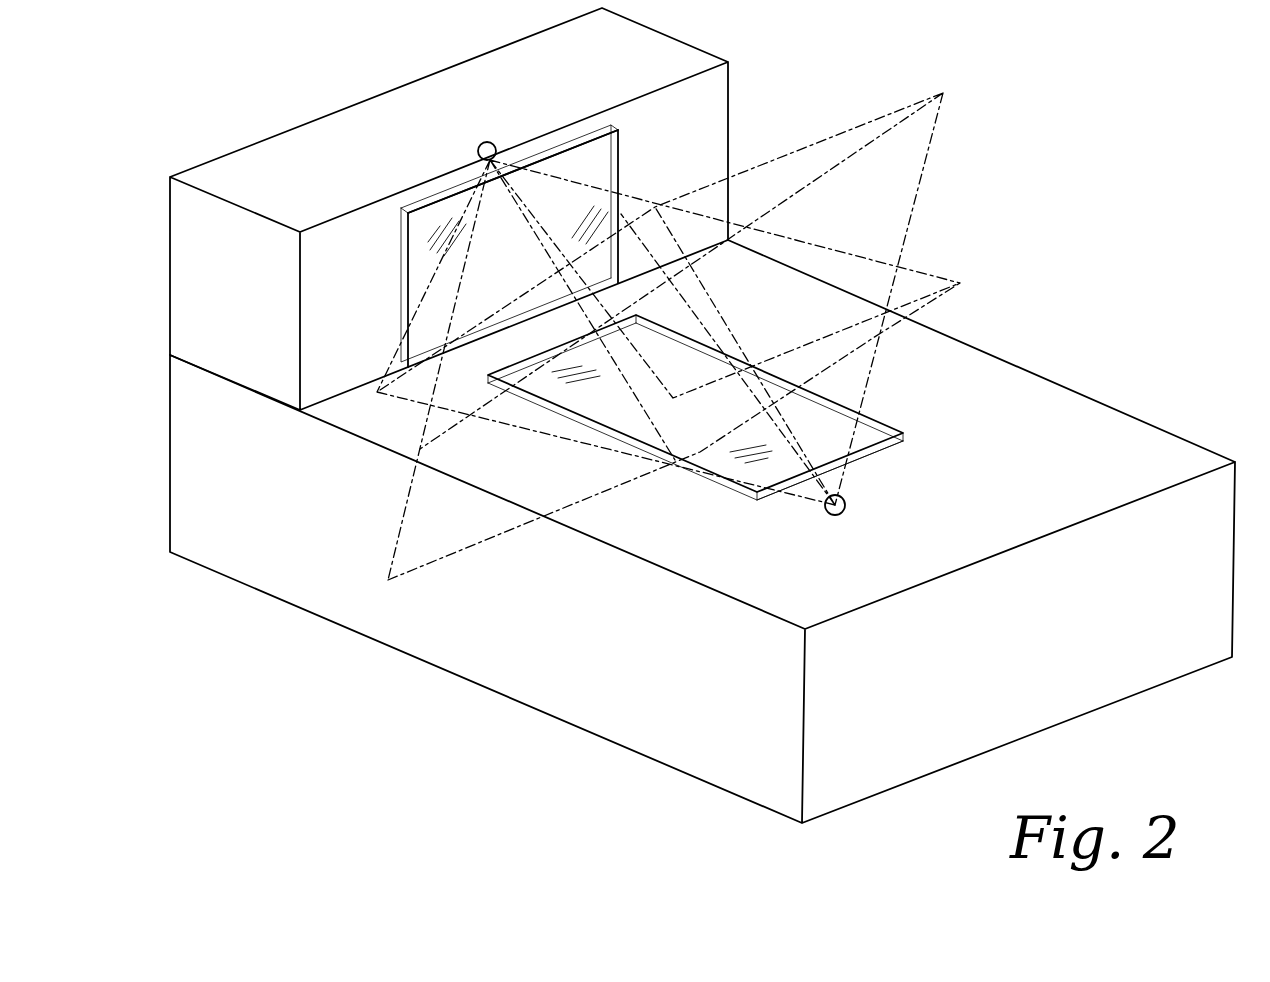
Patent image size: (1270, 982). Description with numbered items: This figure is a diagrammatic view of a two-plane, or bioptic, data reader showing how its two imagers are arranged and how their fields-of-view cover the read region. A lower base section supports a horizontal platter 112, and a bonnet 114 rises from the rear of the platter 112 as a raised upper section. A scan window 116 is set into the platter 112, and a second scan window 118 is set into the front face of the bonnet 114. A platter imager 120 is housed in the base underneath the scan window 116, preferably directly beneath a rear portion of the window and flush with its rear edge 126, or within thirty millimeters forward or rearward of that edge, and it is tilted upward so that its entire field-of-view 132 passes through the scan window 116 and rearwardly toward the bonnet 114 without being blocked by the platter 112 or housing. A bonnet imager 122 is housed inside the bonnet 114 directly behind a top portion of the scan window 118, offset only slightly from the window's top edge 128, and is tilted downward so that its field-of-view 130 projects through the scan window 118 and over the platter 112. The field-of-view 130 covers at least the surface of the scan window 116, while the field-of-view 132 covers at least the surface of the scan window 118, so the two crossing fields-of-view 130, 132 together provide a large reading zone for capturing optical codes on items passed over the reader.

The platter 112 is at (1122, 437).
The bonnet 114 is at (292, 157).
The scan window 116 is at (860, 432).
The scan window 118 is at (590, 165).
The platter imager 120 is at (845, 510).
The bonnet imager 122 is at (478, 147).
The rear edge 126 is at (856, 451).
The top edge 128 is at (548, 150).
The field-of-view 130 is at (452, 513).
The field-of-view 132 is at (875, 205).